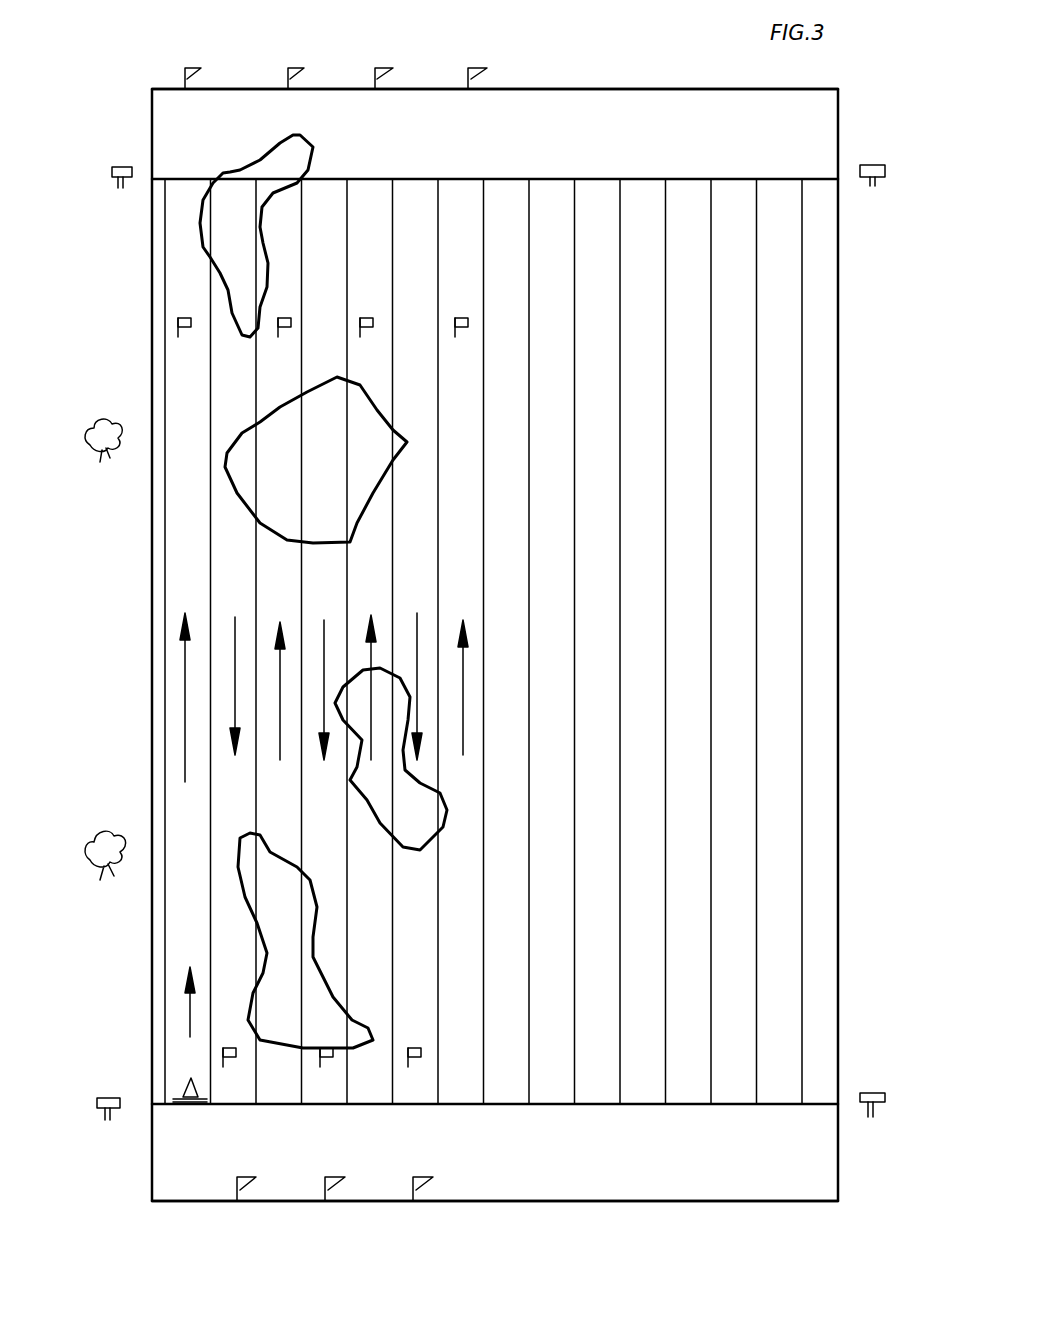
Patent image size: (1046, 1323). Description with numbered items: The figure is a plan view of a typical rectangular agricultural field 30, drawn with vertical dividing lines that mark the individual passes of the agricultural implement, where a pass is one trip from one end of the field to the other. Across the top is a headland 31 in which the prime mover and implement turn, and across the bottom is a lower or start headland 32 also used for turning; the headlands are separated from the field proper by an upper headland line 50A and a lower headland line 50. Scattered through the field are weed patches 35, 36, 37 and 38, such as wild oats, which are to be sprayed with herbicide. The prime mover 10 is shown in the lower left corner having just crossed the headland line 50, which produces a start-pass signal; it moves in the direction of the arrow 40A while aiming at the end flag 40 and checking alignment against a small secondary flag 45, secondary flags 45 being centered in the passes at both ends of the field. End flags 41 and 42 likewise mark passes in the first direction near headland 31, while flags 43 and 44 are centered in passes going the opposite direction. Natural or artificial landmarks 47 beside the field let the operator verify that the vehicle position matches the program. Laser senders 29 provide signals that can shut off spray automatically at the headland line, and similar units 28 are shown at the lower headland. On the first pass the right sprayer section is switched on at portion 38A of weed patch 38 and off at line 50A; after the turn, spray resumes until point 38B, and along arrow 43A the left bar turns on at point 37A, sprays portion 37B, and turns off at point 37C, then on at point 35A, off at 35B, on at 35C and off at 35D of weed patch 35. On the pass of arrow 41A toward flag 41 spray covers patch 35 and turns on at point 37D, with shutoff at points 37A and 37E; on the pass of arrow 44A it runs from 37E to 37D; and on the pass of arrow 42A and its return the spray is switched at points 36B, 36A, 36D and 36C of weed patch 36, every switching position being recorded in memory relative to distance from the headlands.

The prime mover 10 is at (187, 1082).
The lower positioning beacons 28 is at (95, 1102).
The laser sender 29 is at (120, 167).
The agricultural field 30 is at (808, 351).
The headland 31 is at (620, 97).
The lower or start headland 32 is at (630, 1180).
The weed patch 35 is at (300, 943).
The point 35A is at (237, 833).
The point 35B is at (253, 920).
The point 35C is at (267, 977).
The point 35D is at (263, 1040).
The weed patch 36 is at (435, 810).
The point 36A is at (400, 678).
The point 36B is at (390, 845).
The point 36C is at (417, 852).
The point 36D is at (440, 795).
The weed patch 37 is at (388, 446).
The point 37A is at (260, 422).
The portion 37B is at (245, 480).
The point 37C is at (263, 523).
The point 37D is at (350, 542).
The point 37E is at (308, 392).
The weed patch 38 is at (262, 248).
The portion 38A is at (200, 225).
The point 38B is at (240, 337).
The end flag 40 is at (197, 87).
The arrow 40A is at (185, 1005).
The end flag 41 is at (298, 87).
The arrow 41A is at (277, 660).
The end flag 42 is at (383, 87).
The arrow 42A is at (377, 650).
The flag 43 is at (240, 1197).
The arrow 43A is at (233, 635).
The flag 44 is at (330, 1200).
The arrow 44A is at (322, 640).
The secondary flag 45 is at (292, 331).
The landmark 47 is at (83, 439).
The headland line 50 is at (580, 1105).
The headland line 50A is at (687, 177).